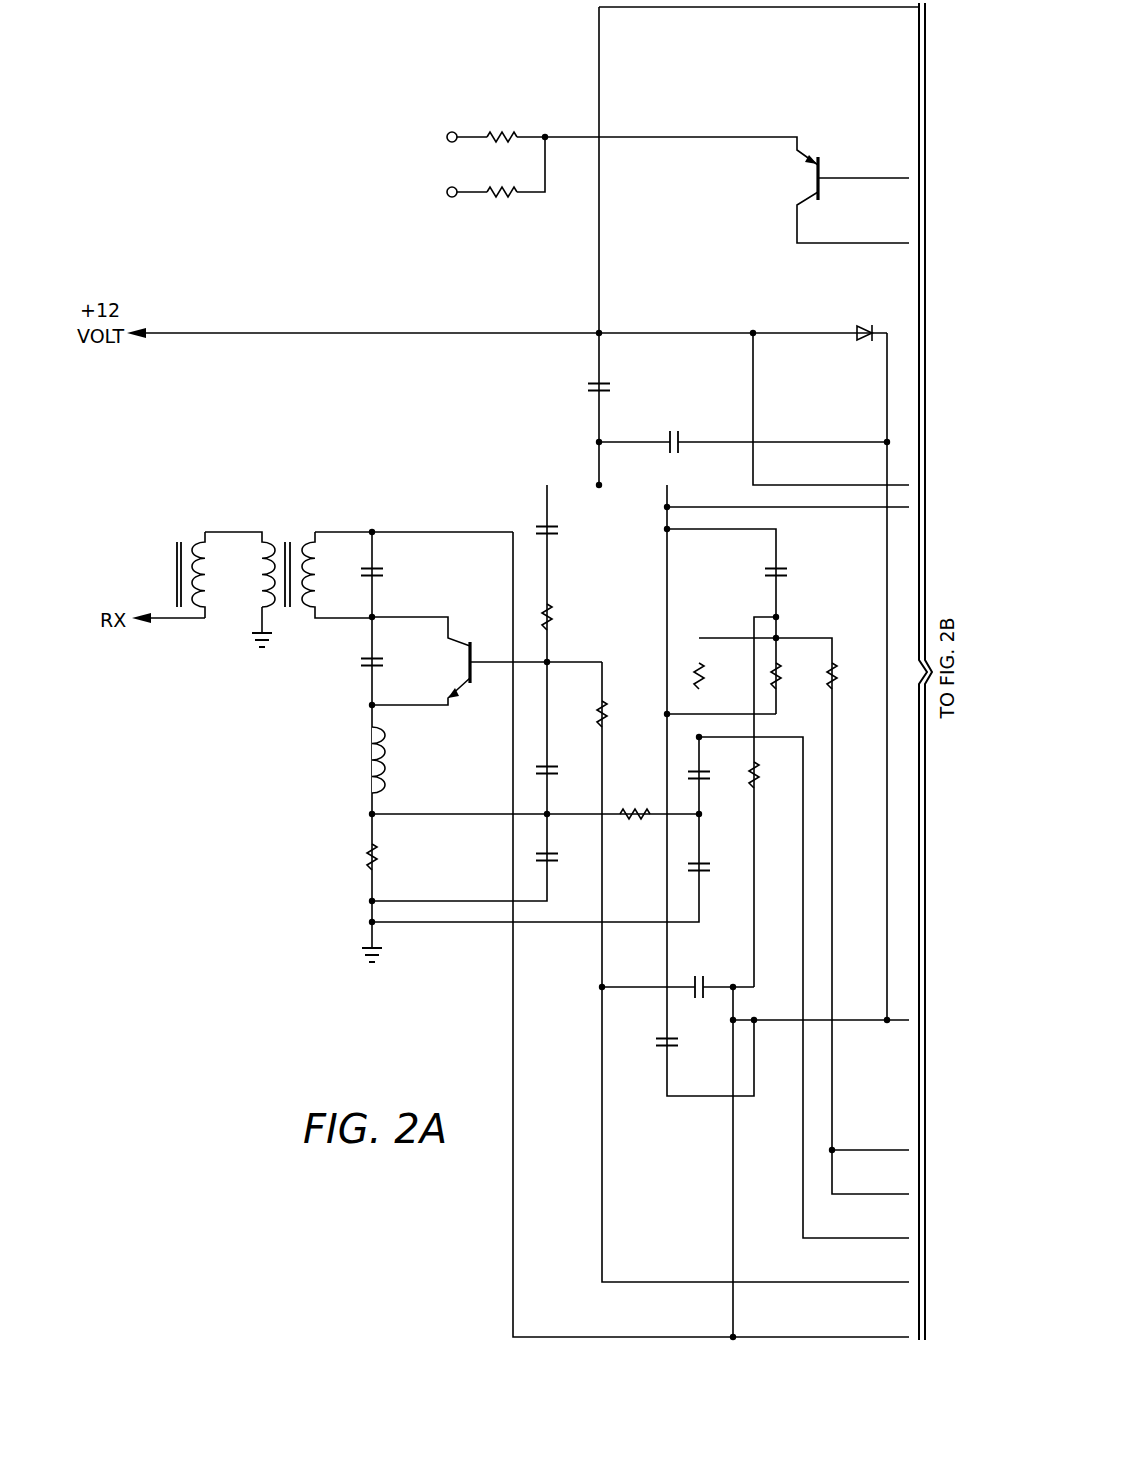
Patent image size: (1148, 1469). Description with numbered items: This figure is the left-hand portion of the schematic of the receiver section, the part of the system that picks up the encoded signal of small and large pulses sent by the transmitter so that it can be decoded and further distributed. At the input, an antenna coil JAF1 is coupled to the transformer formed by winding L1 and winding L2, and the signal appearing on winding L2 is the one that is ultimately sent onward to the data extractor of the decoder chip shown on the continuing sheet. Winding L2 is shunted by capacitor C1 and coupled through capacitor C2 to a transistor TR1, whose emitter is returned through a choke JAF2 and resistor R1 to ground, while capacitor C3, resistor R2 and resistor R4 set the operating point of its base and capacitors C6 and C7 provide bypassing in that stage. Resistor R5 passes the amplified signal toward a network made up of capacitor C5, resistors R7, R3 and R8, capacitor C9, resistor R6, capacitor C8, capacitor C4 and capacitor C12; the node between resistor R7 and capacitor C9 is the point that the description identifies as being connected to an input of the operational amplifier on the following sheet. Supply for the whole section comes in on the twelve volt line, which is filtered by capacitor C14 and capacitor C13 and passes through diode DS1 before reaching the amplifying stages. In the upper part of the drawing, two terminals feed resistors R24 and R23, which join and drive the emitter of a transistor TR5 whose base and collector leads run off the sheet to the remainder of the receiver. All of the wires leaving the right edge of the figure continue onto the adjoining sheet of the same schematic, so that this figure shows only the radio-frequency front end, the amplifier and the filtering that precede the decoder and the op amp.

The resistor R24 is at (632, 138).
The resistor R23 is at (496, 167).
The transistor TR5 is at (839, 188).
The diode DS1 is at (865, 320).
The capacitor C14 is at (621, 387).
The capacitor C13 is at (743, 430).
The capacitor C3 is at (561, 530).
The resistor R2 is at (564, 617).
The resistor R4 is at (618, 714).
The capacitor C6 is at (561, 770).
The capacitor C7 is at (561, 857).
The resistor R5 is at (635, 802).
The inductor JAF1 is at (168, 575).
The transformer primary winding L1 is at (247, 569).
The transformer secondary winding L2 is at (407, 575).
The capacitor C1 is at (387, 573).
The capacitor C2 is at (387, 662).
The transistor TR1 is at (487, 662).
The inductor JAF2 is at (359, 760).
The resistor R1 is at (387, 857).
The capacitor C5 is at (791, 572).
The resistor R7 is at (714, 676).
The resistor R3 is at (791, 676).
The resistor R8 is at (847, 676).
The capacitor C9 is at (714, 775).
The resistor R6 is at (769, 775).
The capacitor C8 is at (714, 867).
The capacitor C4 is at (698, 975).
The capacitor C12 is at (688, 1042).